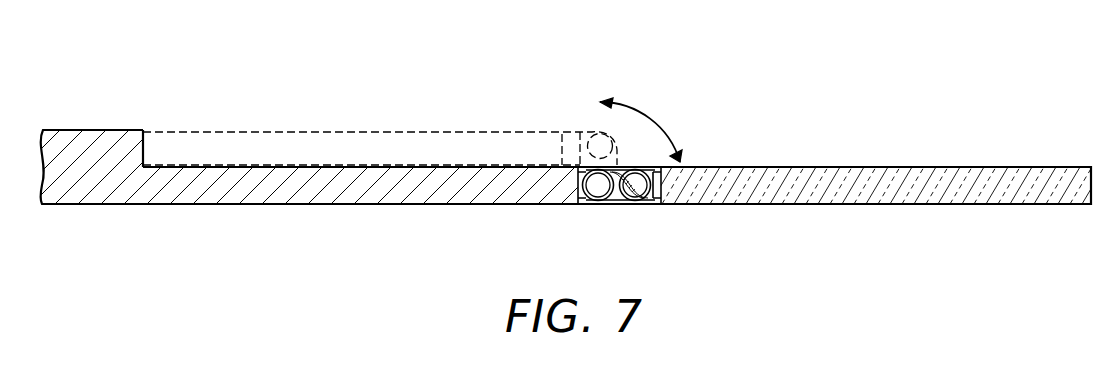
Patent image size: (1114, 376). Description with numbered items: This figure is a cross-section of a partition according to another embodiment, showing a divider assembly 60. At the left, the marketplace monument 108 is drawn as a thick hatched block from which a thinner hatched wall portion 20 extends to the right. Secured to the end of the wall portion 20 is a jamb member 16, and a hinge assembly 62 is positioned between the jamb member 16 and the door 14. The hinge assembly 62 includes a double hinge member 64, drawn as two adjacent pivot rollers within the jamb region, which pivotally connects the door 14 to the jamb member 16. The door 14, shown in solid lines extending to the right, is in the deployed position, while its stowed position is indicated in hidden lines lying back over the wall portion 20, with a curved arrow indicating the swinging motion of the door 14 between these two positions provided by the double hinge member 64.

The divider assembly 60 is at (725, 95).
The marketplace monument 108 is at (100, 195).
The wall portion 20 is at (320, 195).
The jamb member 16 is at (580, 205).
The double hinge member 64 is at (617, 204).
The hinge assembly 62 is at (660, 218).
The door 14 is at (863, 195).